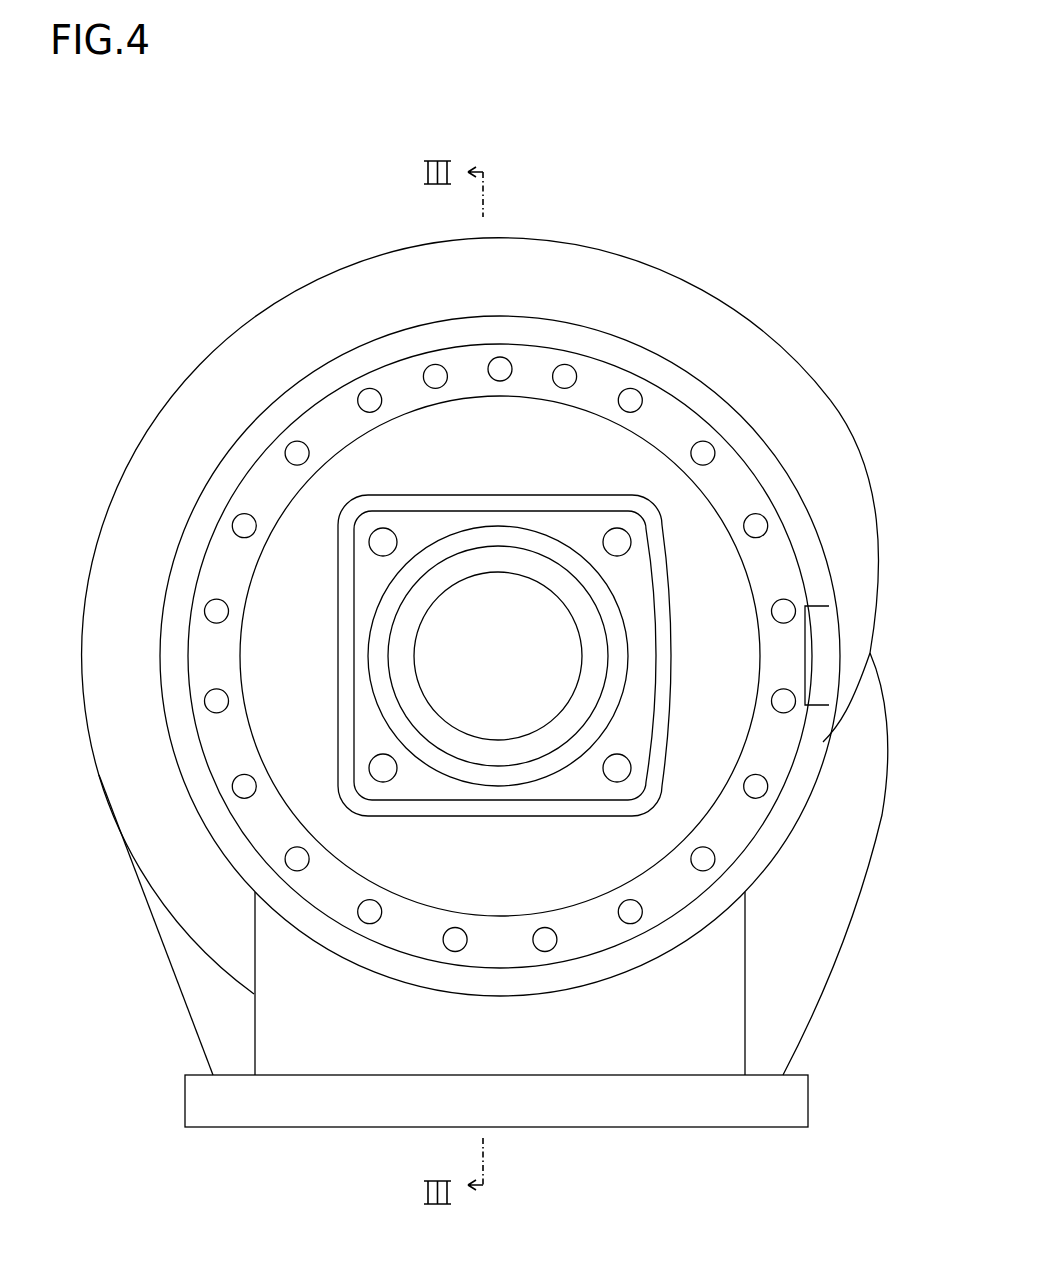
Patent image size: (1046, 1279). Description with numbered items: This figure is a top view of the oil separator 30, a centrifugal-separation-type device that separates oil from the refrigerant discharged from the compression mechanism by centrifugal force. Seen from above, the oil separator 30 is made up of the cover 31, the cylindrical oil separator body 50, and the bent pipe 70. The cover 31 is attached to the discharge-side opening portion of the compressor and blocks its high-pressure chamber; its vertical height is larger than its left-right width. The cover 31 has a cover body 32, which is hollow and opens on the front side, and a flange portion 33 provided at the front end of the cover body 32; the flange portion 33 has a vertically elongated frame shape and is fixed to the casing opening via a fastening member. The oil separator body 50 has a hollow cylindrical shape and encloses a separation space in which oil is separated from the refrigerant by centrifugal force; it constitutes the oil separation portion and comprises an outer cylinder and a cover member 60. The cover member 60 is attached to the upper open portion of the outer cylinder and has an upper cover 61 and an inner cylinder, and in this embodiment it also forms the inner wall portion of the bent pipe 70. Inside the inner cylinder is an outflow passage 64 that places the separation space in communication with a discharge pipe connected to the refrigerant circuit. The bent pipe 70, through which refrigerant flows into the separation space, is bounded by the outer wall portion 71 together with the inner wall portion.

The oil separator 30 is at (782, 190).
The cover 31 is at (780, 1022).
The cover body 32 is at (254, 1025).
The flange portion 33 is at (185, 1098).
The oil separator body 50 is at (802, 467).
The cover member 60 is at (728, 403).
The upper cover 61 is at (686, 578).
The outflow passage 64 is at (462, 658).
The bent pipe 70 is at (322, 277).
The outer wall portion 71 is at (230, 344).